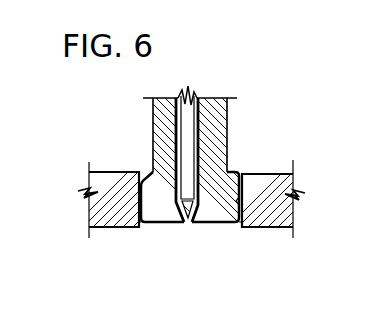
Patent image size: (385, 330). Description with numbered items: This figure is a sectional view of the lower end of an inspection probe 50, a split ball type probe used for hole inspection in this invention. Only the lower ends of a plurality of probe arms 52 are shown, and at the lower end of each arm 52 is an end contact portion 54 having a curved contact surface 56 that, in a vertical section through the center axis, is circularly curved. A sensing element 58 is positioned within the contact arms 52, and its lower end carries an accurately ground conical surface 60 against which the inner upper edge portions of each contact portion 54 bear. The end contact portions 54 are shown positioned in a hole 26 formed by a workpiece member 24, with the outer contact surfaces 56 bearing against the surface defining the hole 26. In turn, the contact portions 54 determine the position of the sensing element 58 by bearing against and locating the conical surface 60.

The workpiece member 24 is at (90, 207).
The hole 26 is at (232, 172).
The inspection probe 50 is at (139, 98).
The probe arm 52 is at (163, 127).
The end contact portion 54 is at (157, 210).
The curved contact surface 56 is at (125, 228).
The sensing element 58 is at (188, 144).
The conical surface 60 is at (198, 222).